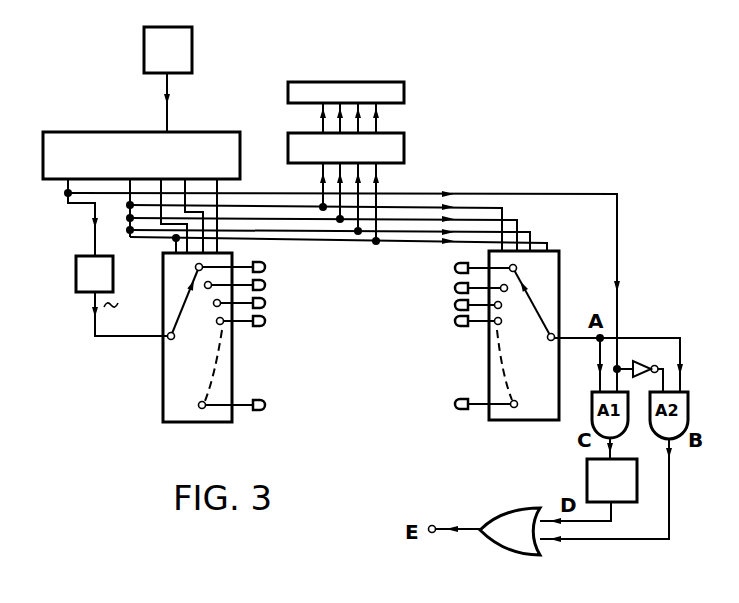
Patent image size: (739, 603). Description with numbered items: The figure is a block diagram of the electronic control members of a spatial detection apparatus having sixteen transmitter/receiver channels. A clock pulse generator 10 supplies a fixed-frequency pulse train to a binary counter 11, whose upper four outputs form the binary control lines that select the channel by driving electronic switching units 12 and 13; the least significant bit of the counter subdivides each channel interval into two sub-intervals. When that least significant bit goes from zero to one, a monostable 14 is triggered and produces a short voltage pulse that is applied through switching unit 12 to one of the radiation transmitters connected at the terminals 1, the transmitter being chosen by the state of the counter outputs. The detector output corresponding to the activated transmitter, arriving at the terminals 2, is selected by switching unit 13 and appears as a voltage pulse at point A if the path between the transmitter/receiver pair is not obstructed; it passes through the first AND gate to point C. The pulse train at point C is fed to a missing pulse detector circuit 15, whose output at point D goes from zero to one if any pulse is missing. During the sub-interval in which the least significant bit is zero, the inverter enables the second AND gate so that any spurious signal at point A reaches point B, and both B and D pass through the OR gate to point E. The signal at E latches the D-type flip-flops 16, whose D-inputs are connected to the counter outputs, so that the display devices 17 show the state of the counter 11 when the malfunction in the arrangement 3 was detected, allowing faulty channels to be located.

The connector terminals of first switching unit 1 is at (282, 401).
The connector terminals of second switching unit 2 is at (455, 404).
The circuit arrangement 3 is at (372, 313).
The clock pulse generator 10 is at (194, 52).
The binary counter 11 is at (236, 132).
The electronic switching unit 12 is at (163, 385).
The electronic switching unit 13 is at (532, 410).
The monostable 14 is at (76, 266).
The missing pulse detector circuit 15 is at (587, 467).
The D-type flip-flops 16 is at (404, 148).
The display devices 17 is at (404, 92).